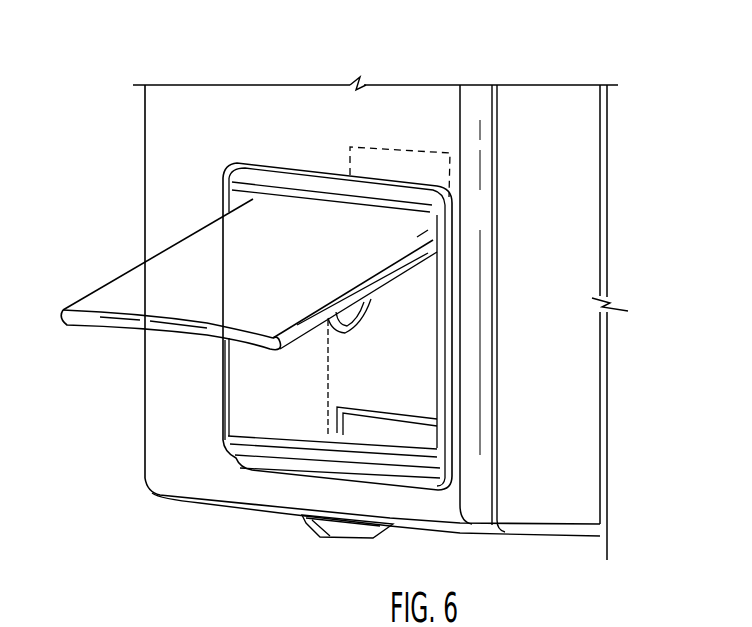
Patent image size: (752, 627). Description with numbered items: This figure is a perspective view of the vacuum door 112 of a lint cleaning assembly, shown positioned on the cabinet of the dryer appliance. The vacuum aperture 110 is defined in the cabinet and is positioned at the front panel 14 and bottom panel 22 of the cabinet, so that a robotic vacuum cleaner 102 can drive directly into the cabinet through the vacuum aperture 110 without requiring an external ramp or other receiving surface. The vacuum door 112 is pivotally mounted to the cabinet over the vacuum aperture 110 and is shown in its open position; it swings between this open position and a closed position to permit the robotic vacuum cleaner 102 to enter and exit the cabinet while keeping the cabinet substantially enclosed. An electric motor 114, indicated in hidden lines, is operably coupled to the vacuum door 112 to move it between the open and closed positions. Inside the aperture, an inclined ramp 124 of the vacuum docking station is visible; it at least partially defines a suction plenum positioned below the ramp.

The front panel 14 is at (238, 107).
The bottom panel 22 is at (222, 503).
The robotic vacuum cleaner 102 is at (555, 115).
The vacuum aperture 110 is at (252, 402).
The vacuum door 112 is at (197, 285).
The electric motor 114 is at (406, 150).
The inclined ramp 124 is at (426, 413).